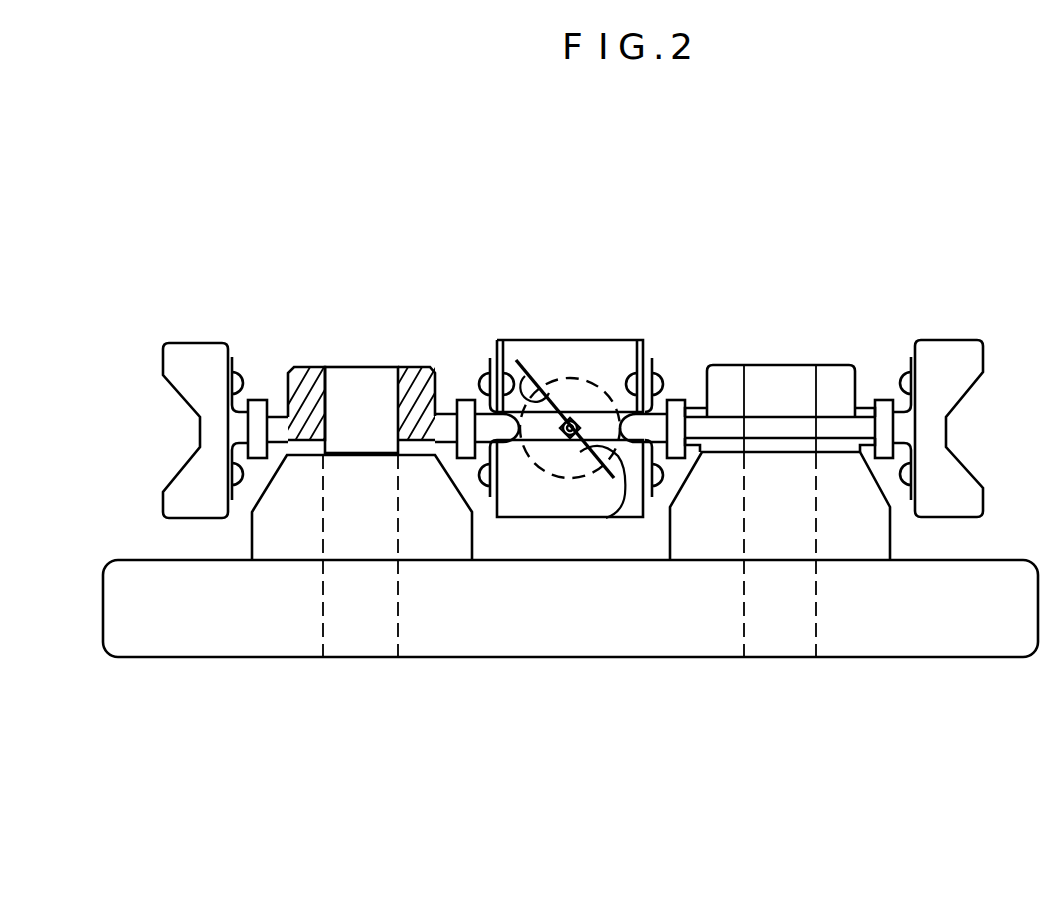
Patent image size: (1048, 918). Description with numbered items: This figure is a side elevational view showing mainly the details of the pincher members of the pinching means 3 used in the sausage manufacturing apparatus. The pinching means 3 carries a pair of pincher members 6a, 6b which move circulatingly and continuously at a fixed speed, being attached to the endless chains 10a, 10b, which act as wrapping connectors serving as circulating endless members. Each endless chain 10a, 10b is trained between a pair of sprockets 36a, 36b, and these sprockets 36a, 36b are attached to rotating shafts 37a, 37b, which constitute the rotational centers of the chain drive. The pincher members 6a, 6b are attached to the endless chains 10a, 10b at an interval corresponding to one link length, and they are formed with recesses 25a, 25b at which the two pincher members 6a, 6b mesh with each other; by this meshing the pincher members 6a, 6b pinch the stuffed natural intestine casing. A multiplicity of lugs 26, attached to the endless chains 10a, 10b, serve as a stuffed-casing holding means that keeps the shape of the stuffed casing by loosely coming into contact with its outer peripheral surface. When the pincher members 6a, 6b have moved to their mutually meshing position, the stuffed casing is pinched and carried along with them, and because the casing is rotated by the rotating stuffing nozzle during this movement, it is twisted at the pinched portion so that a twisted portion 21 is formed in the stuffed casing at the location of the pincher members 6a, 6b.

The pinching means 3 is at (677, 725).
The lugs 26 is at (203, 367).
The endless chain 10a is at (886, 410).
The endless chain 10b is at (256, 418).
The sprocket 36a is at (838, 410).
The sprocket 36b is at (298, 385).
The rotating shaft 37a is at (774, 388).
The rotating shaft 37b is at (362, 385).
The pincher member 6a is at (600, 363).
The pincher member 6b is at (513, 357).
The recess 25a is at (525, 362).
The recess 25b is at (612, 478).
The twisted portion 21 is at (536, 400).